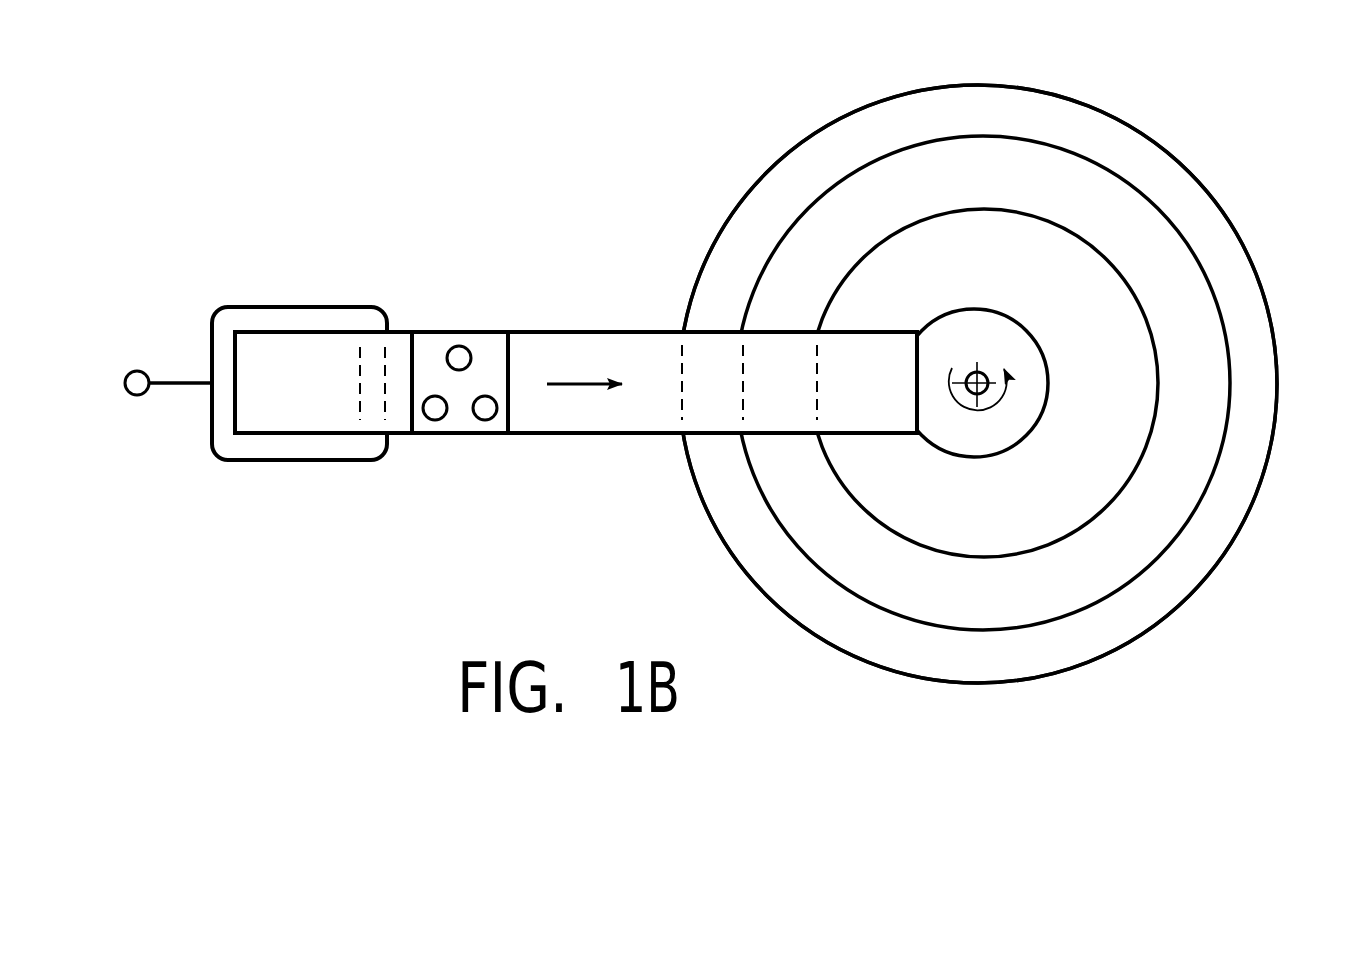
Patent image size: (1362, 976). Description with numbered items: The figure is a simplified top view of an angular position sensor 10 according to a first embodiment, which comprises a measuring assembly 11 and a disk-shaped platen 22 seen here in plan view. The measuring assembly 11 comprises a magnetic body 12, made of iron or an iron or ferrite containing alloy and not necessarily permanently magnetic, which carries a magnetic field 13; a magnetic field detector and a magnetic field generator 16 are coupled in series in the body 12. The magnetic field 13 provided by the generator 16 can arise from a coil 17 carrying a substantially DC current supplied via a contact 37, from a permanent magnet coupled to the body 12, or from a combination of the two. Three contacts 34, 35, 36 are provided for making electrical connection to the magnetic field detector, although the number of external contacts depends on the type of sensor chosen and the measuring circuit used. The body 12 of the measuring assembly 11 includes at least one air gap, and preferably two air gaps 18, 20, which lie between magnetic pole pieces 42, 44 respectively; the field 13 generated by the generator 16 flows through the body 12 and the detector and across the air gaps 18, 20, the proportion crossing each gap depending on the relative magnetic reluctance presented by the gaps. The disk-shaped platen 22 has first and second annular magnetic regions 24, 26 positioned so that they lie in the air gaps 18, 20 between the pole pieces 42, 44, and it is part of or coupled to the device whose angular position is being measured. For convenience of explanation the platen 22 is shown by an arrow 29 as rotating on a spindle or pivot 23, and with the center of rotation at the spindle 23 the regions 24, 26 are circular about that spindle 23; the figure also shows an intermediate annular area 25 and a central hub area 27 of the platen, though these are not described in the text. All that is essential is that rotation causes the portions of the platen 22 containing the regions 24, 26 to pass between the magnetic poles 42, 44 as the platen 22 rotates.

The angular position sensor 10 is at (514, 161).
The measuring assembly 11 is at (374, 505).
The magnetic body 12 is at (600, 332).
The magnetic field 13 is at (595, 387).
The magnetic field generator 16 is at (293, 395).
The coil 17 is at (278, 308).
The air gap 18 is at (705, 405).
The air gap 20 is at (848, 358).
The disk-shaped platen 22 is at (1261, 283).
The spindle 23 is at (983, 370).
The first annular magnetic region 24 is at (1266, 401).
The middle disc zone 25 is at (1201, 401).
The second annular magnetic region 26 is at (1112, 401).
The disc hub 27 is at (1022, 357).
The arrow 29 is at (1000, 400).
The contact 34 is at (433, 421).
The contact 35 is at (460, 343).
The contact 36 is at (483, 421).
The contact 37 is at (135, 370).
The magnetic pole pieces 42 is at (692, 390).
The magnetic pole pieces 44 is at (877, 417).